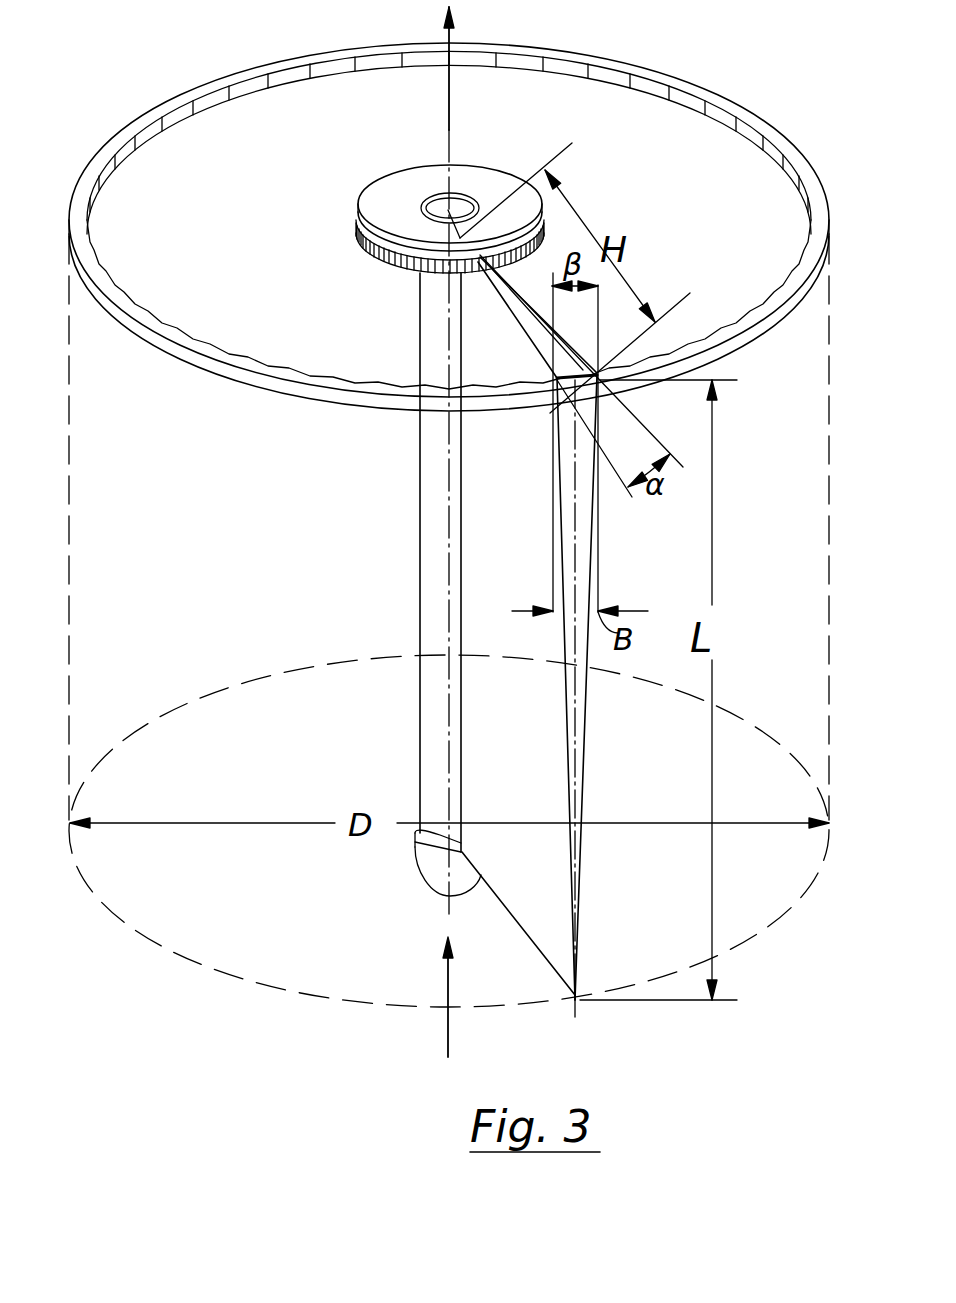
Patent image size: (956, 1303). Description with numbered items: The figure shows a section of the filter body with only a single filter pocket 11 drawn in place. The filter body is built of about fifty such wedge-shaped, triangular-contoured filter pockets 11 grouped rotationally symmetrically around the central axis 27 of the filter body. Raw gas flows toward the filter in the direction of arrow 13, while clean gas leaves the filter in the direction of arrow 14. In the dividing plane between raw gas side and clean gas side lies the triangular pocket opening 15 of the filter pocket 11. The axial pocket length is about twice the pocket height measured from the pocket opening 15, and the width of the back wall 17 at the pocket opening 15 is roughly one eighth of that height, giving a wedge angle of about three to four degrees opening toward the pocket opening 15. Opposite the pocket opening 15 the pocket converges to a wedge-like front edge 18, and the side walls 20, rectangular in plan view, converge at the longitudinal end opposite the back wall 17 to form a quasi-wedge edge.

The filter pocket 11 is at (606, 711).
The arrow indicating raw gas flow 13 is at (449, 1045).
The arrow indicating clean gas flow 14 is at (452, 36).
The pocket opening 15 is at (550, 349).
The back wall 17 is at (563, 444).
The wedge-like front edge 18 is at (527, 936).
The side wall 20 is at (549, 887).
The axis 27 is at (447, 473).